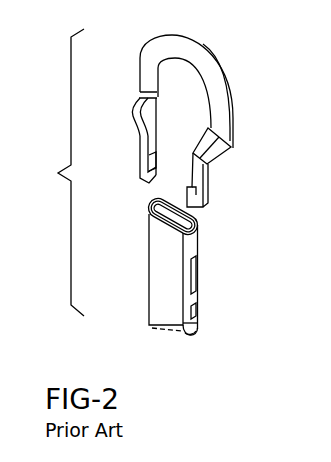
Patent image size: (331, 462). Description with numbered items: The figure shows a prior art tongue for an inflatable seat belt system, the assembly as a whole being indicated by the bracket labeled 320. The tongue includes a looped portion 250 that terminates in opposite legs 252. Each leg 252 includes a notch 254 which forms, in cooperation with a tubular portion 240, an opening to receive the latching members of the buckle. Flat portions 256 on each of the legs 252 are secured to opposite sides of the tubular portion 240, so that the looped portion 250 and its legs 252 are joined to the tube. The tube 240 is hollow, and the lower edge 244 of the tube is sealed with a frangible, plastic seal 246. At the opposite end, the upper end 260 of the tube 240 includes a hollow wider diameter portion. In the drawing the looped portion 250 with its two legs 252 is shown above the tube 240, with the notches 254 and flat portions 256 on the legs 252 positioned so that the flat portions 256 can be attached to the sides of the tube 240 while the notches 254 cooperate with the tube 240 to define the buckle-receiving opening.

The prior art connector assembly 320 is at (55, 172).
The looped portion 250 is at (152, 70).
The legs 252 is at (150, 133).
The notch 254 is at (190, 190).
The flat portions 256 is at (150, 153).
The tubular portion 240 is at (162, 272).
The lower edge 244 is at (155, 330).
The frangible plastic seal 246 is at (174, 337).
The upper end 260 is at (198, 222).